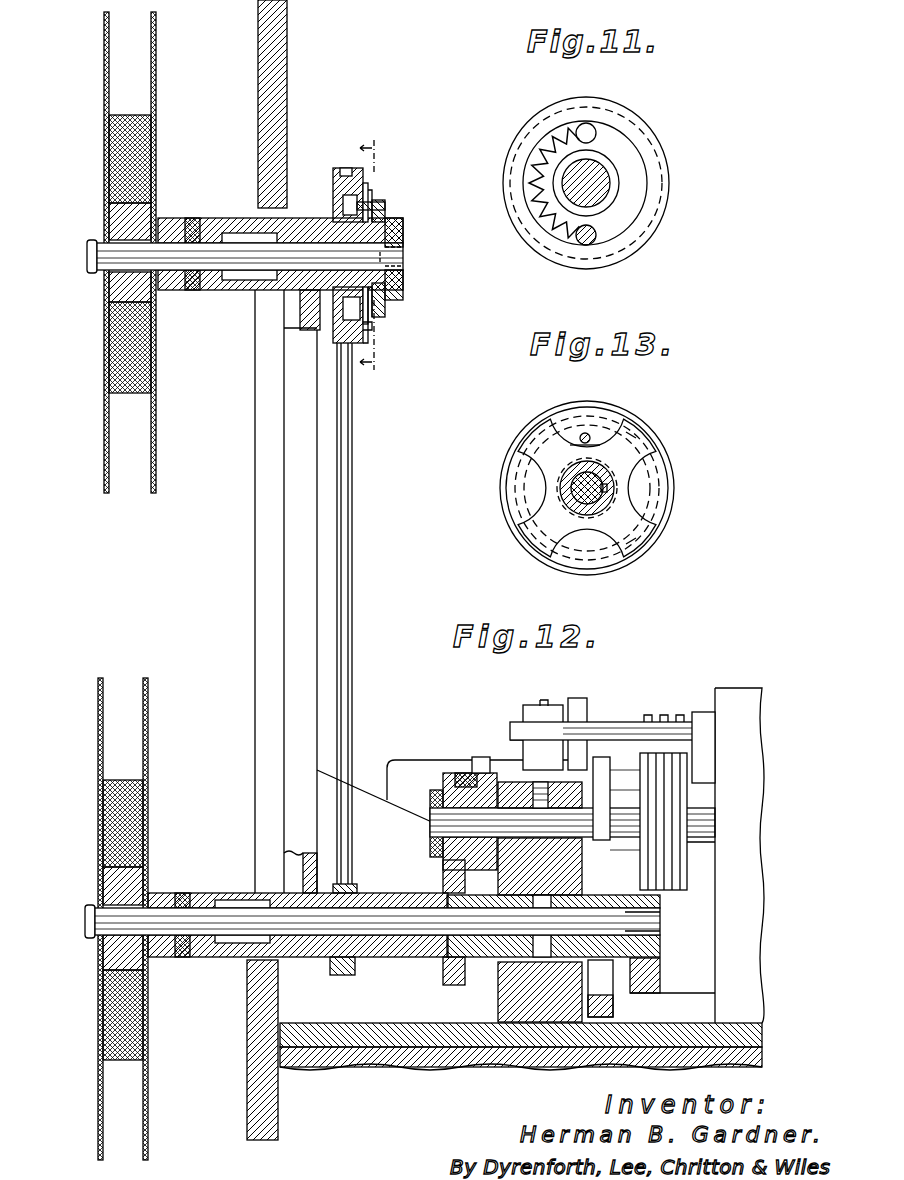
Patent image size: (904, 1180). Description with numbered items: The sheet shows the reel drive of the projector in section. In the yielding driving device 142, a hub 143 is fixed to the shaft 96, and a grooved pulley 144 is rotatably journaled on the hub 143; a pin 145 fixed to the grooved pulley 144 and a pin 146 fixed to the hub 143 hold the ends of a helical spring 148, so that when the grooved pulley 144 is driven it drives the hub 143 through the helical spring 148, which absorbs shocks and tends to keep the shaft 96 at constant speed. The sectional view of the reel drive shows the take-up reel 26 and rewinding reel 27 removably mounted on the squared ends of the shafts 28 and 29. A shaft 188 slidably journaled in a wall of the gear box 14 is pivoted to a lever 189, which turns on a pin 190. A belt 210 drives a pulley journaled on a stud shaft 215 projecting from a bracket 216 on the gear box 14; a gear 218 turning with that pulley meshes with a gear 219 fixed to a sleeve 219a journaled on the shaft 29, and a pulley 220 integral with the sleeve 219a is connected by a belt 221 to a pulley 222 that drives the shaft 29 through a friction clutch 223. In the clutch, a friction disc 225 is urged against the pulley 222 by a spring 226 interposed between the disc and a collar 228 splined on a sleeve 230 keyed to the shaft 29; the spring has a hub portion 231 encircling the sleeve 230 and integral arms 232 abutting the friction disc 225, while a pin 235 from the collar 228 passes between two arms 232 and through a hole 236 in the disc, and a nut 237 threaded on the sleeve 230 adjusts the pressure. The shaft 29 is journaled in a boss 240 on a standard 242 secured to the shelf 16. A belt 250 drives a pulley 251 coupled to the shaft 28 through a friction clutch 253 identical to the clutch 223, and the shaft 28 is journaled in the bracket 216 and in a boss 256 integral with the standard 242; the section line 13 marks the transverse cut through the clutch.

In FIG. 12, the gear box 14 is at (745, 1003).
In FIG. 12, the shelf 16 is at (462, 1067).
In FIG. 12, the take-up reel 26 is at (98, 1115).
In FIG. 12, the rewinding reel 27 is at (104, 453).
In FIG. 12, the shaft 28 is at (666, 930).
In FIG. 12, the shaft 29 is at (255, 258).
In FIG. 13, the shaft 29 is at (575, 490).
In FIG. 11, the shaft 96 is at (605, 190).
In FIG. 11, the yielding driving device 142 is at (676, 229).
In FIG. 11, the hub 143 is at (610, 177).
In FIG. 11, the grooved pulley 144 is at (617, 115).
In FIG. 11, the pin 145 is at (597, 130).
In FIG. 11, the pin 146 is at (597, 238).
In FIG. 11, the helical spring 148 is at (548, 213).
In FIG. 12, the shaft 188 is at (600, 722).
In FIG. 12, the lever 189 is at (523, 745).
In FIG. 12, the pin 190 is at (550, 705).
In FIG. 12, the belt 210 is at (478, 757).
In FIG. 12, the stud shaft 215 is at (445, 822).
In FIG. 12, the bracket 216 is at (498, 1007).
In FIG. 12, the gear 218 is at (450, 778).
In FIG. 12, the gear 219 is at (445, 980).
In FIG. 12, the sleeve 219a is at (395, 877).
In FIG. 12, the pulley 220 is at (357, 968).
In FIG. 12, the belt 221 is at (346, 431).
In FIG. 12, the pulley 222 is at (374, 344).
In FIG. 12, the friction clutch 223 is at (374, 328).
In FIG. 12, the friction disc 225 is at (365, 180).
In FIG. 13, the friction disc 225 is at (632, 558).
In FIG. 12, the spring 226 is at (373, 200).
In FIG. 13, the spring 226 is at (625, 460).
In FIG. 12, the collar 228 is at (386, 206).
In FIG. 12, the sleeve 230 is at (403, 236).
In FIG. 13, the sleeve 230 is at (562, 486).
In FIG. 13, the hub portion 231 is at (608, 490).
In FIG. 12, the arms 232 is at (368, 192).
In FIG. 13, the arms 232 is at (628, 435).
In FIG. 12, the pin 235 is at (345, 202).
In FIG. 13, the pin 235 is at (582, 435).
In FIG. 12, the hole 236 is at (357, 208).
In FIG. 13, the hole 236 is at (575, 440).
In FIG. 12, the nut 237 is at (386, 290).
In FIG. 12, the boss 240 is at (318, 222).
In FIG. 12, the standard 242 is at (290, 468).
In FIG. 12, the belt 250 is at (600, 770).
In FIG. 12, the pulley 251 is at (614, 1012).
In FIG. 12, the friction clutch 253 is at (655, 980).
In FIG. 12, the boss 256 is at (213, 960).
In FIG. 12, the section line 13 is at (374, 257).